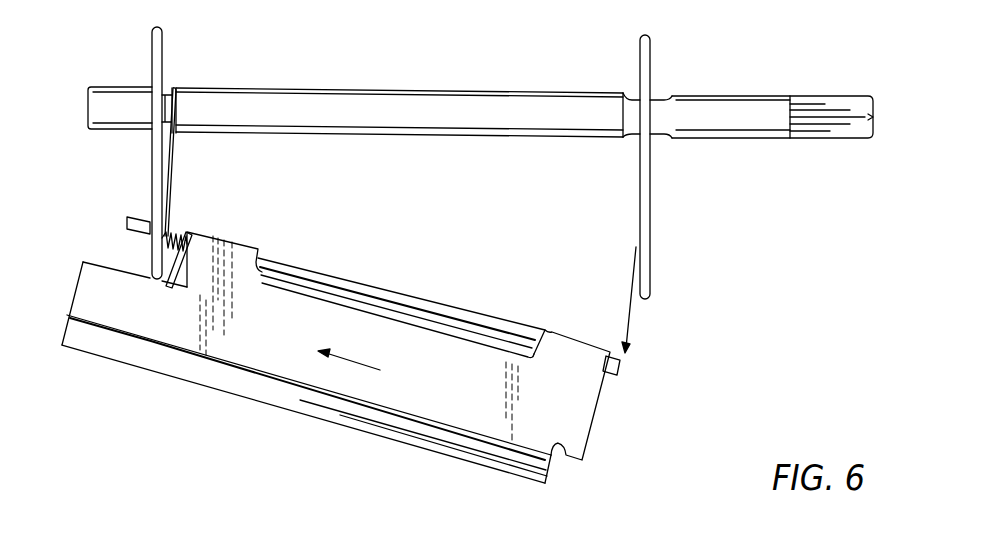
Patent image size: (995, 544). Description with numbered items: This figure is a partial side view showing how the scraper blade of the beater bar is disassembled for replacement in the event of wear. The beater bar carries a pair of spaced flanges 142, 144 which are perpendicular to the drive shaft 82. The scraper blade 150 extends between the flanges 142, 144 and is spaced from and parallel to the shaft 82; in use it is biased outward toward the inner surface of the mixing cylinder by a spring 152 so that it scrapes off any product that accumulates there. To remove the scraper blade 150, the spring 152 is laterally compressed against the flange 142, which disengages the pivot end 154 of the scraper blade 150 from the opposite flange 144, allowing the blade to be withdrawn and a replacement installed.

The drive shaft 82 is at (408, 98).
The flange 142 is at (153, 48).
The flange 144 is at (650, 64).
The scraper blade 150 is at (587, 412).
The spring 152 is at (172, 175).
The pivot end 154 is at (621, 366).